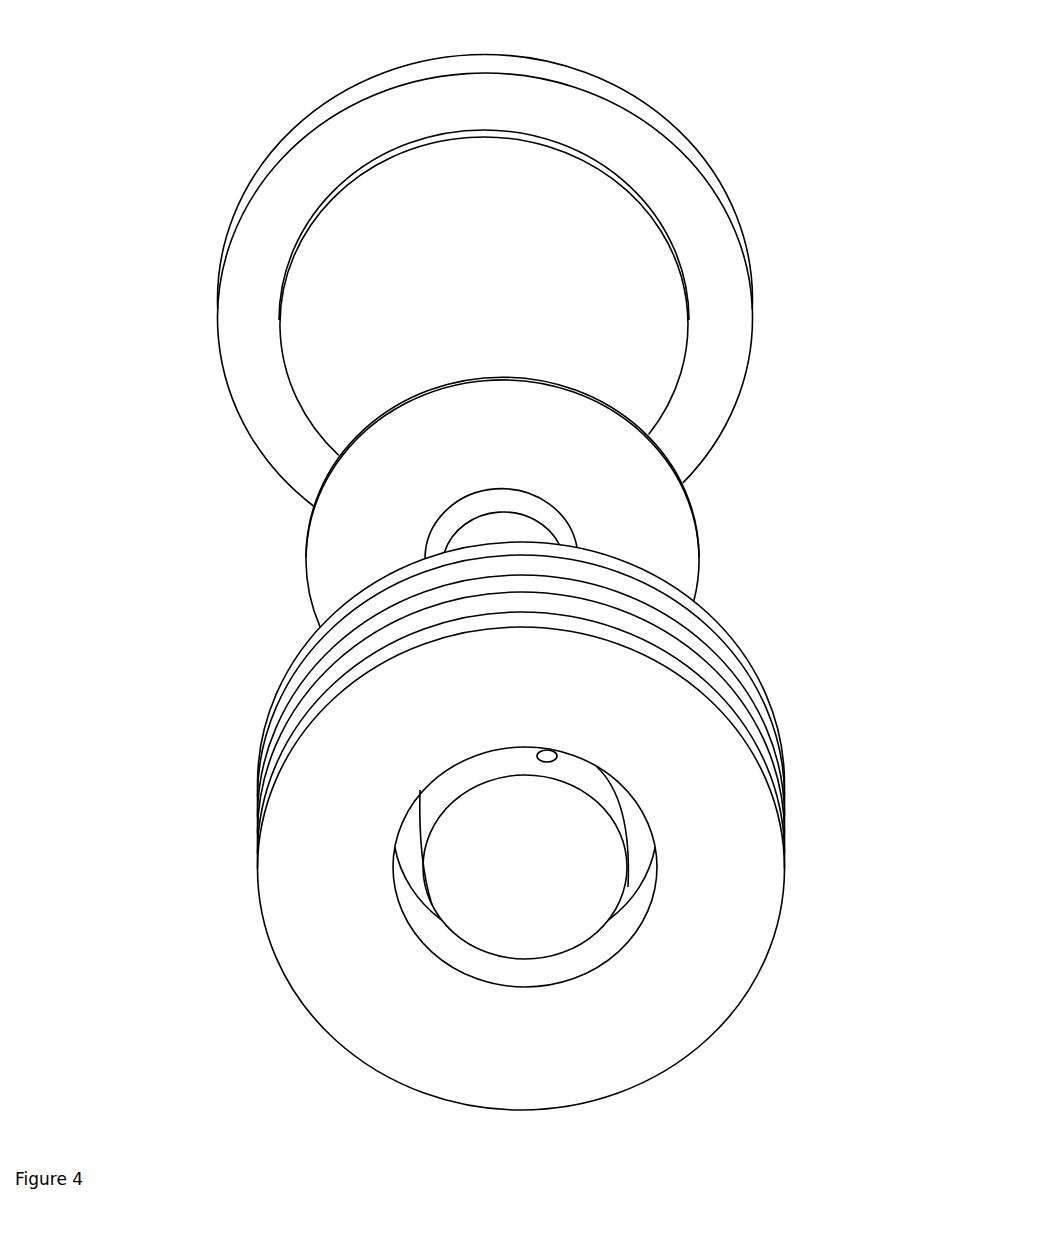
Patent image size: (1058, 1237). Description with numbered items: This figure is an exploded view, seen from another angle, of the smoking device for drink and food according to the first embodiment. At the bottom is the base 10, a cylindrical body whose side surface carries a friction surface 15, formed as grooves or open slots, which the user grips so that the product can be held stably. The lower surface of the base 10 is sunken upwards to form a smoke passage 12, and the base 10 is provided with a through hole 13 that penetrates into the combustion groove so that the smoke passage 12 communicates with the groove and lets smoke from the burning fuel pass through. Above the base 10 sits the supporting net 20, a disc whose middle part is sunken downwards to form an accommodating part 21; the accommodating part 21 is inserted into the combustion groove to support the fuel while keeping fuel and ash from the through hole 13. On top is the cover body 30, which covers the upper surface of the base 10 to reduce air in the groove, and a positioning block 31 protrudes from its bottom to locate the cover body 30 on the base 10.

The base 10 is at (767, 628).
The smoke passage 12 is at (412, 904).
The through hole 13 is at (545, 757).
The friction surface 15 is at (318, 673).
The supporting net 20 is at (397, 474).
The accommodating part 21 is at (508, 527).
The cover body 30 is at (308, 182).
The positioning block 31 is at (600, 258).